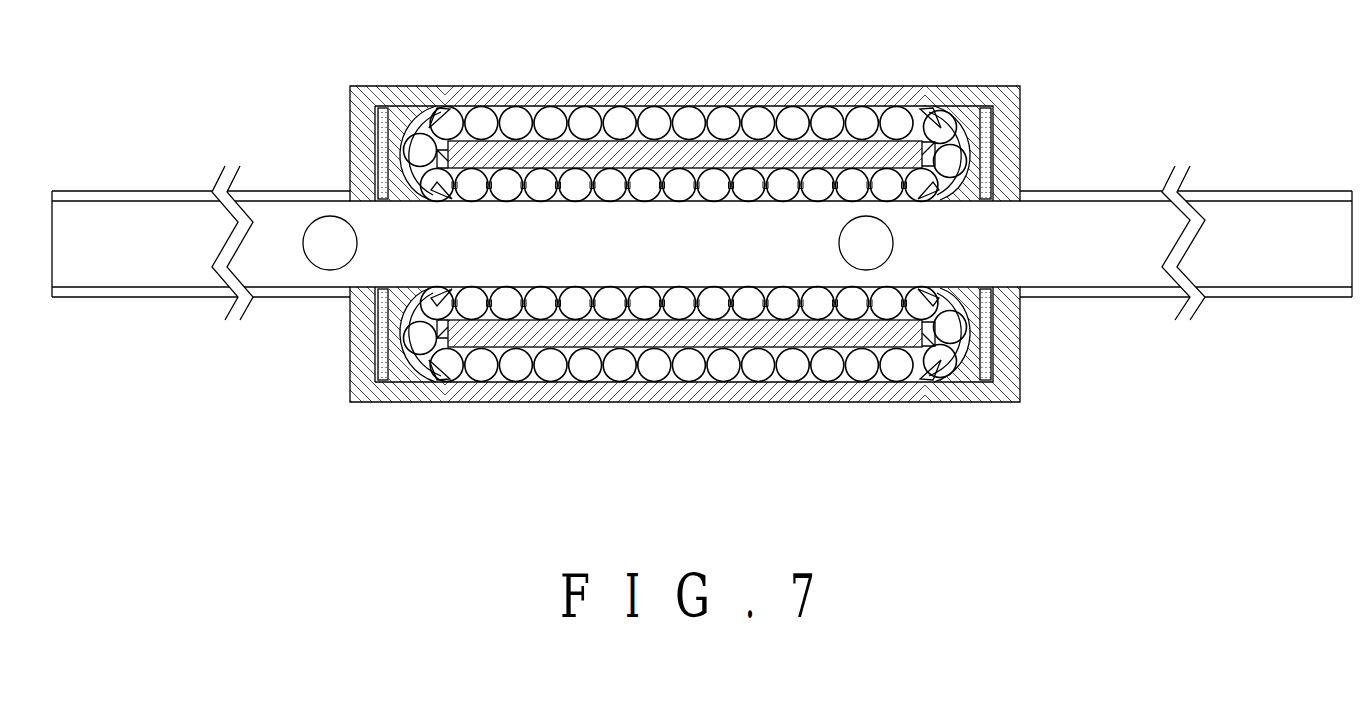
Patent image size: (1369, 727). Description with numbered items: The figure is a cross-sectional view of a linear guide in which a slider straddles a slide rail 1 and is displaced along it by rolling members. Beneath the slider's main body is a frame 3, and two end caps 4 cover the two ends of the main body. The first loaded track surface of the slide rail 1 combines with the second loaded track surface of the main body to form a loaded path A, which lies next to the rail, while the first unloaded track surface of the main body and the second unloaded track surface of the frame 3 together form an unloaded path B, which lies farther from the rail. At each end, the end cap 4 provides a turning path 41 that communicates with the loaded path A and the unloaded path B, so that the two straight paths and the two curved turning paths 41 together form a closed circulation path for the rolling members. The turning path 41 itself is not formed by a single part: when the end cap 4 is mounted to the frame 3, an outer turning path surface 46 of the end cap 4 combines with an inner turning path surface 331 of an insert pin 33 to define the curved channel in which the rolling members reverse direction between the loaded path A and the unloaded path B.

The slide rail 1 is at (165, 212).
The frame 3 is at (753, 95).
The insert pin 33 is at (482, 130).
The inner turning path surface 331 is at (428, 148).
The end cap 4 is at (407, 115).
The turning path 41 is at (427, 118).
The outer turning path surface 46 is at (377, 128).
The loaded path A is at (596, 172).
The unloaded path B is at (672, 112).